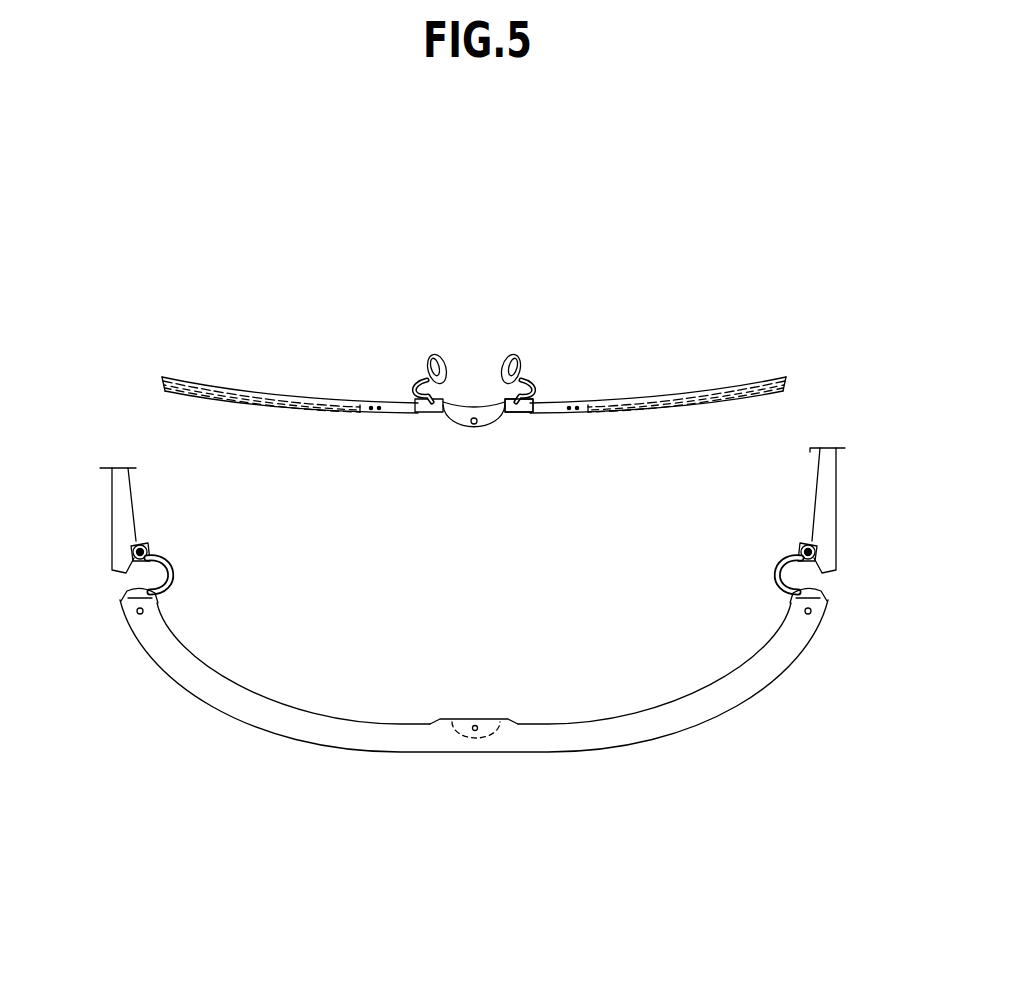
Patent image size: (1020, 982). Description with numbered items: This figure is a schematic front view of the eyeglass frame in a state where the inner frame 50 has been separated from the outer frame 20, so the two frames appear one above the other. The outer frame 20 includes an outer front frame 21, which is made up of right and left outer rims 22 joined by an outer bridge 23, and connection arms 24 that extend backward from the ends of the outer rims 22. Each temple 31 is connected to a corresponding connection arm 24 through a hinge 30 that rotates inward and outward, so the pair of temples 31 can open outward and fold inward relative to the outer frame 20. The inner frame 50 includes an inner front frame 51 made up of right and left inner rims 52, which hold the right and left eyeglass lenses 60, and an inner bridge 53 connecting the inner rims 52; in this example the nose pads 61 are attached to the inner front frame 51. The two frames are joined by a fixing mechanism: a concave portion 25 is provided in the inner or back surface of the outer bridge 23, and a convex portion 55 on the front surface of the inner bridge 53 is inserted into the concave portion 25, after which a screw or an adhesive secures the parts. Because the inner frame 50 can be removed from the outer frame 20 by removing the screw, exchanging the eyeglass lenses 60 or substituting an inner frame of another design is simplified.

The outer frame 20 is at (198, 798).
The outer front frame 21 is at (665, 865).
The outer rim 22 is at (705, 717).
The outer bridge 23 is at (483, 750).
The connection arm 24 is at (807, 632).
The concave portion 25 is at (487, 718).
The hinge 30 is at (152, 553).
The temple 31 is at (133, 485).
The inner frame 50 is at (170, 290).
The inner front frame 51 is at (612, 312).
The inner rim 52 is at (563, 402).
The inner bridge 53 is at (472, 406).
The convex portion 55 is at (486, 429).
The eyeglass lens 60 is at (730, 388).
The nose pad 61 is at (430, 352).